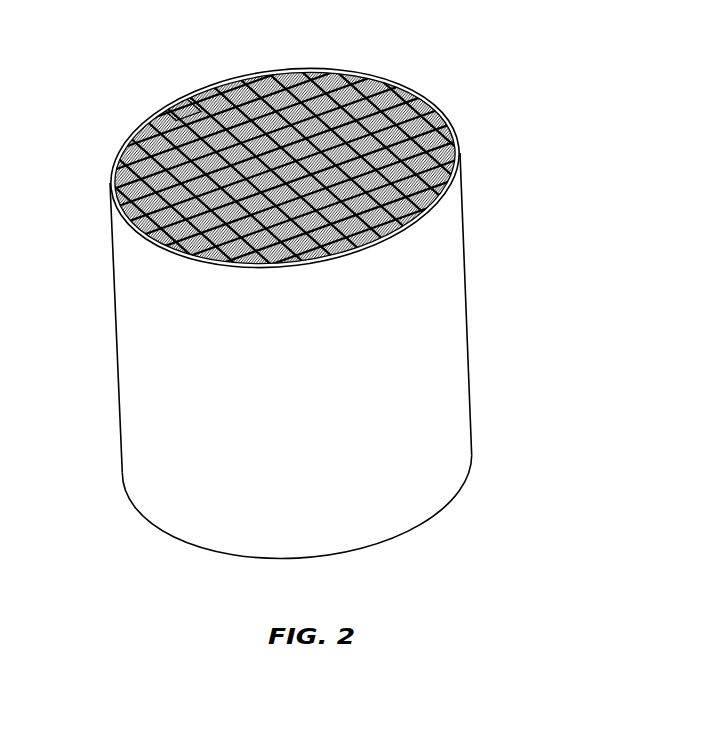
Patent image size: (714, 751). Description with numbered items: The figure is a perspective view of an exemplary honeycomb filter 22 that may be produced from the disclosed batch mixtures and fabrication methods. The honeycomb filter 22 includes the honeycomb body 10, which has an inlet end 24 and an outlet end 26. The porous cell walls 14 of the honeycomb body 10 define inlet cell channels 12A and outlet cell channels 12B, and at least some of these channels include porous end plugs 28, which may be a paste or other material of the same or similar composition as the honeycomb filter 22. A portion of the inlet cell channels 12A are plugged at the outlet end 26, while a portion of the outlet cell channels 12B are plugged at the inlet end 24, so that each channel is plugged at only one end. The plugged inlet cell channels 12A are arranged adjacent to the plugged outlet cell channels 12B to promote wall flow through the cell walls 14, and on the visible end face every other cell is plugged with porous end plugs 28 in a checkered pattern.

The honeycomb filter 22 is at (550, 46).
The honeycomb body 10 is at (126, 175).
The inlet cell channels 12A is at (208, 112).
The outlet cell channels 12B is at (172, 107).
The porous cell walls 14 is at (342, 90).
The inlet end 24 is at (418, 100).
The outlet end 26 is at (395, 538).
The porous end plugs 28 is at (236, 78).